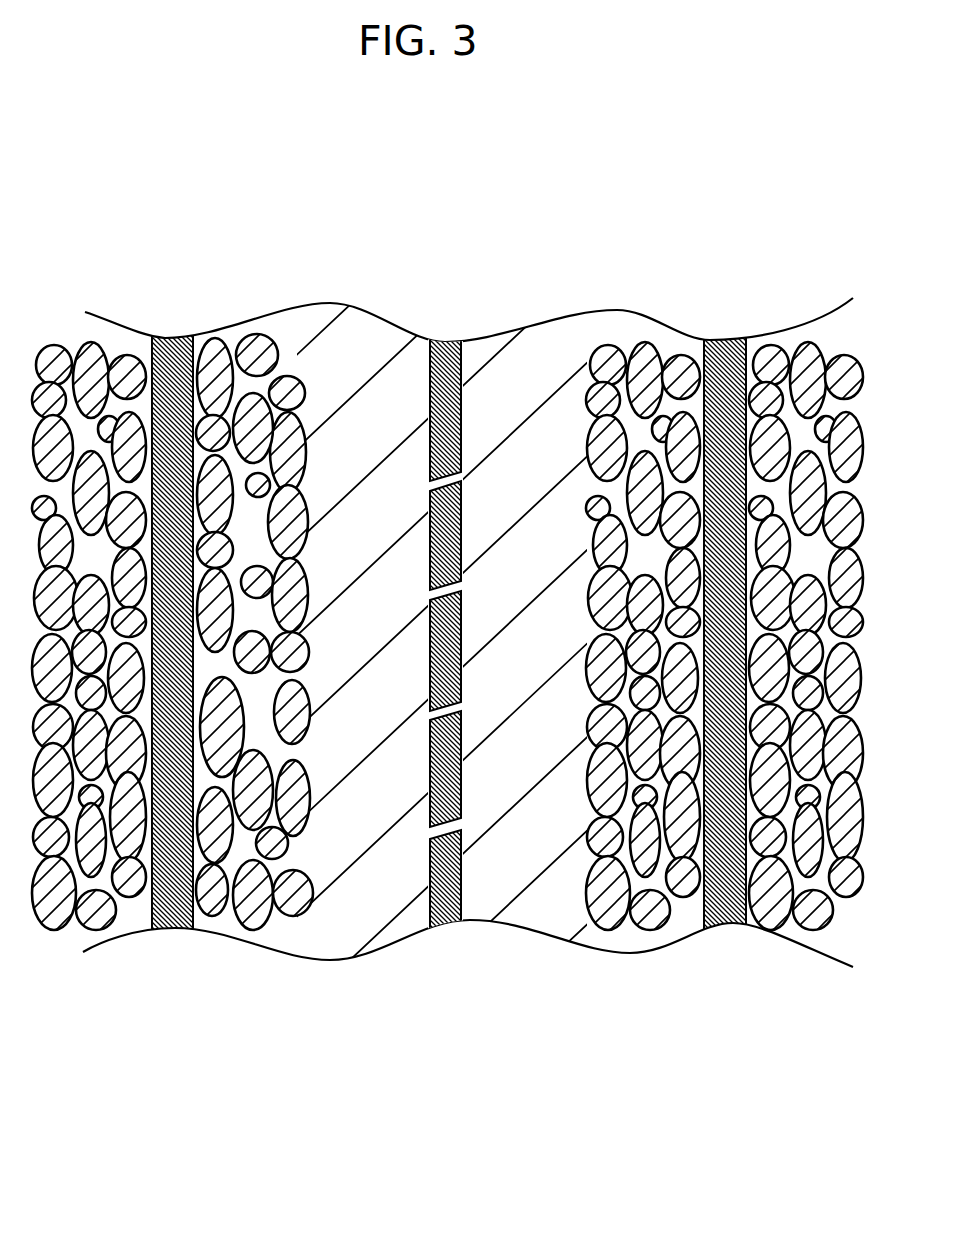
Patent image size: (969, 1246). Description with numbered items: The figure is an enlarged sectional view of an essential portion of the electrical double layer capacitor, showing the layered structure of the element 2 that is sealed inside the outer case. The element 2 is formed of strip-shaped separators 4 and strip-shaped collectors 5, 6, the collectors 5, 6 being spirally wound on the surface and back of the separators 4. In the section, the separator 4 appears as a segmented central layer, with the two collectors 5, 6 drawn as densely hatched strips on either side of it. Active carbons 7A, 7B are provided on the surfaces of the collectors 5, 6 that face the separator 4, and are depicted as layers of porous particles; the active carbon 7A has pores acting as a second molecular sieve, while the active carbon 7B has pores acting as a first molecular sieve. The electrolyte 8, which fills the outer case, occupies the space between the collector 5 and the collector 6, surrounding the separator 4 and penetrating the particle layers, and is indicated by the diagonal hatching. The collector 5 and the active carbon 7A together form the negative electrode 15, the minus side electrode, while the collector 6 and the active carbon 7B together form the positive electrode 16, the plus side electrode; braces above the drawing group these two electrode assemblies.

The element 2 is at (353, 987).
The separator 4 is at (453, 353).
The collector 5 is at (162, 382).
The collector 6 is at (740, 343).
The active carbon 7A is at (248, 348).
The active carbon 7B is at (650, 347).
The electrolyte 8 is at (547, 910).
The negative electrode 15 is at (217, 245).
The positive electrode 16 is at (808, 245).